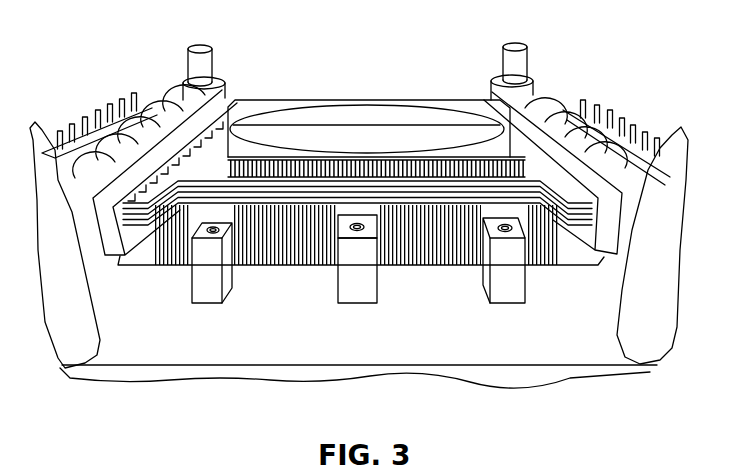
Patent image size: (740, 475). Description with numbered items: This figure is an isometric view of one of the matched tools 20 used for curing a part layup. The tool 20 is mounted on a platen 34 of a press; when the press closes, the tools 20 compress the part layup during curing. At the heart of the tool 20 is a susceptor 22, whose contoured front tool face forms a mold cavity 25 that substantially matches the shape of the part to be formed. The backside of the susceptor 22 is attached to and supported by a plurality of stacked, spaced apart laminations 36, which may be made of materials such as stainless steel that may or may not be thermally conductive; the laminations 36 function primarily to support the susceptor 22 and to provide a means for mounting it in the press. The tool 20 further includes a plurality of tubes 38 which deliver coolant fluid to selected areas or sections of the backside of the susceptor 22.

The matched tools 20 is at (592, 139).
The susceptor 22 is at (203, 153).
The mold cavity 25 is at (405, 126).
The platen 34 is at (288, 337).
The laminations 36 is at (440, 372).
The tubes 38 is at (103, 113).